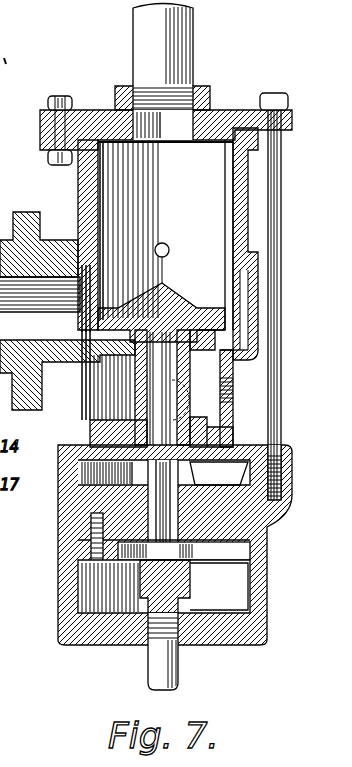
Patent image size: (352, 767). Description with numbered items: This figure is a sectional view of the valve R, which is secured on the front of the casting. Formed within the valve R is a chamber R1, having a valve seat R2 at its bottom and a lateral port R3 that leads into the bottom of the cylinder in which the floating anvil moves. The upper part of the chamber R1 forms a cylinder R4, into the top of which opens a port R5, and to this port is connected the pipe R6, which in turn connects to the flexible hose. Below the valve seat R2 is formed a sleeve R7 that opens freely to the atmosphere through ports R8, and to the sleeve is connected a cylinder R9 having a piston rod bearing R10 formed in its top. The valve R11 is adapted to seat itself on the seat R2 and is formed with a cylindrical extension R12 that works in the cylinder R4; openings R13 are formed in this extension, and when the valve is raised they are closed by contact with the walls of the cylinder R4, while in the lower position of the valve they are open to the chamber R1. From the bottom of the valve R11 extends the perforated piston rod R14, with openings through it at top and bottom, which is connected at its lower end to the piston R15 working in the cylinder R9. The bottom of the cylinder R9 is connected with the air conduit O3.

The valve R is at (166, 114).
The chamber R1 is at (219, 334).
The valve seat R2 is at (222, 352).
The lateral port R3 is at (67, 311).
The cylinder R4 is at (96, 187).
The port R5 is at (160, 125).
The pipe R6 is at (163, 56).
The sleeve R7 is at (211, 388).
The ports R8 is at (230, 398).
The cylinder R9 is at (219, 586).
The piston rod bearing R10 is at (135, 434).
The valve R11 is at (222, 323).
The cylindrical extension R12 is at (228, 178).
The openings R13 is at (167, 248).
The perforated piston rod R14 is at (135, 378).
The piston R15 is at (88, 526).
The air conduit O3 is at (170, 672).